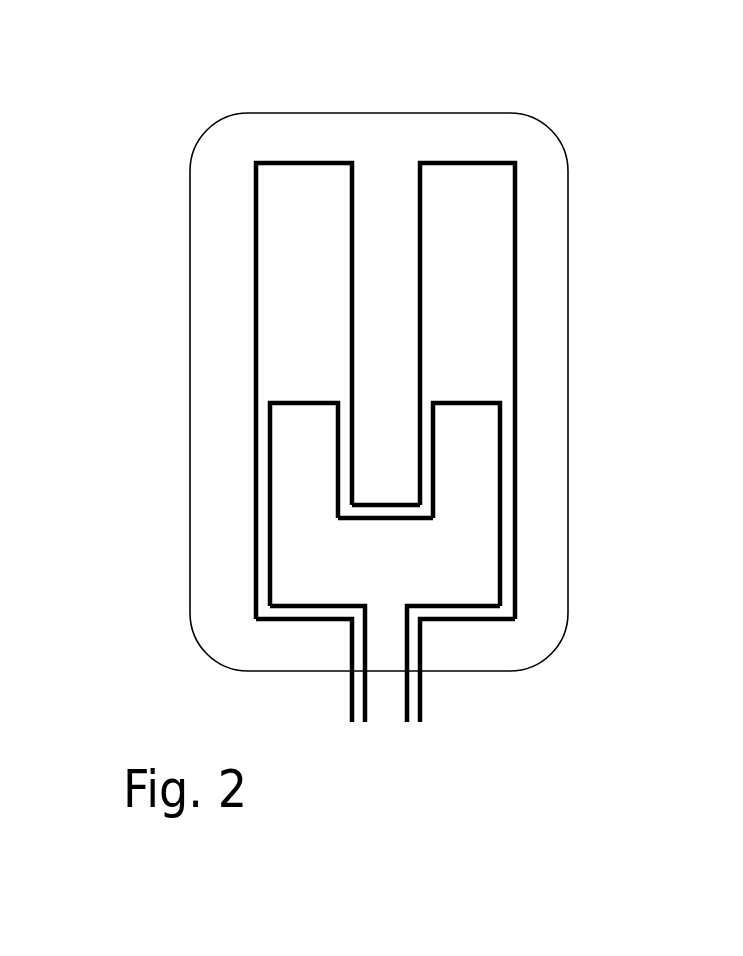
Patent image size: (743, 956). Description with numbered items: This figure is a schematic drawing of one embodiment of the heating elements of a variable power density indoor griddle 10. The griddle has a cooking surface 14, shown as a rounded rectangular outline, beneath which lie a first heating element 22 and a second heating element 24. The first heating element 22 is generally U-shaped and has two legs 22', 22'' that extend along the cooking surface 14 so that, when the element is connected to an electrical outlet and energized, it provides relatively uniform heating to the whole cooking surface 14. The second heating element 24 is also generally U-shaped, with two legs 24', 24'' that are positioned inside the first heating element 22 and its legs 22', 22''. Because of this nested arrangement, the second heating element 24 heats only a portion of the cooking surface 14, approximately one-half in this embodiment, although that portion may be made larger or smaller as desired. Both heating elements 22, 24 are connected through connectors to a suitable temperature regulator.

The variable power density indoor griddle 10 is at (586, 138).
The cooking surface 14 is at (218, 623).
The first heating element 22 is at (415, 380).
The leg of first heating element 22' is at (332, 328).
The leg of first heating element 22'' is at (499, 334).
The second heating element 24 is at (387, 552).
The leg of second heating element 24' is at (304, 464).
The leg of second heating element 24'' is at (469, 459).